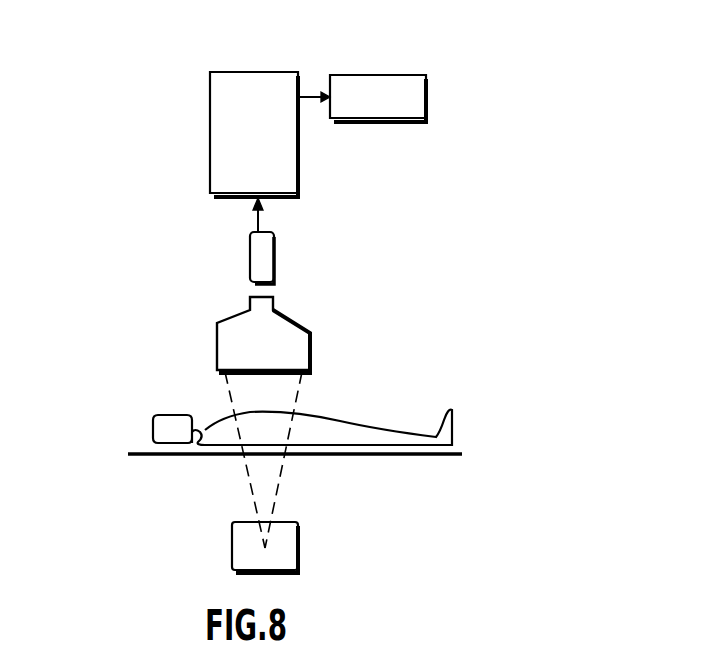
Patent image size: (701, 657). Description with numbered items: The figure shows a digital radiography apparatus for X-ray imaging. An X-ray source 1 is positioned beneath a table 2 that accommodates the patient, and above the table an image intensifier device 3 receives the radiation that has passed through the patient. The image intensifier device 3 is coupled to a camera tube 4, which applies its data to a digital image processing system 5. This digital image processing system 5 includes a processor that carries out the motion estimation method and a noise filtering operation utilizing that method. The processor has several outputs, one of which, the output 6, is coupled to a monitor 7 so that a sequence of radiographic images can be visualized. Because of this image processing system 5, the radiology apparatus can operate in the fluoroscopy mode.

The X-ray source 1 is at (232, 548).
The table 2 is at (178, 460).
The image intensifier device 3 is at (213, 323).
The camera tube 4 is at (247, 254).
The digital image processing system 5 is at (222, 143).
The output 6 is at (315, 84).
The monitor 7 is at (430, 99).